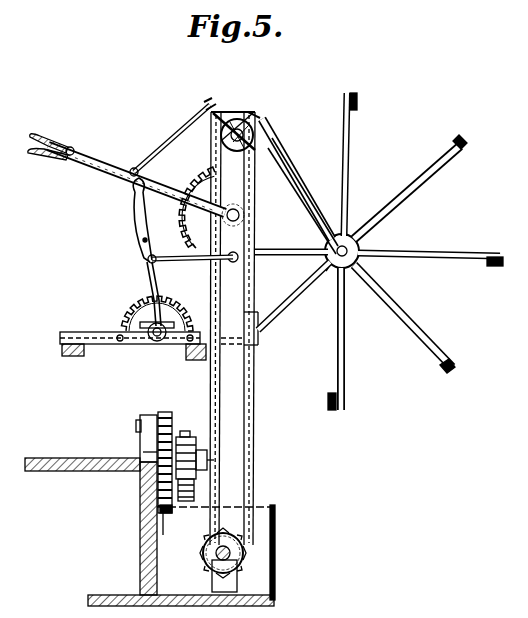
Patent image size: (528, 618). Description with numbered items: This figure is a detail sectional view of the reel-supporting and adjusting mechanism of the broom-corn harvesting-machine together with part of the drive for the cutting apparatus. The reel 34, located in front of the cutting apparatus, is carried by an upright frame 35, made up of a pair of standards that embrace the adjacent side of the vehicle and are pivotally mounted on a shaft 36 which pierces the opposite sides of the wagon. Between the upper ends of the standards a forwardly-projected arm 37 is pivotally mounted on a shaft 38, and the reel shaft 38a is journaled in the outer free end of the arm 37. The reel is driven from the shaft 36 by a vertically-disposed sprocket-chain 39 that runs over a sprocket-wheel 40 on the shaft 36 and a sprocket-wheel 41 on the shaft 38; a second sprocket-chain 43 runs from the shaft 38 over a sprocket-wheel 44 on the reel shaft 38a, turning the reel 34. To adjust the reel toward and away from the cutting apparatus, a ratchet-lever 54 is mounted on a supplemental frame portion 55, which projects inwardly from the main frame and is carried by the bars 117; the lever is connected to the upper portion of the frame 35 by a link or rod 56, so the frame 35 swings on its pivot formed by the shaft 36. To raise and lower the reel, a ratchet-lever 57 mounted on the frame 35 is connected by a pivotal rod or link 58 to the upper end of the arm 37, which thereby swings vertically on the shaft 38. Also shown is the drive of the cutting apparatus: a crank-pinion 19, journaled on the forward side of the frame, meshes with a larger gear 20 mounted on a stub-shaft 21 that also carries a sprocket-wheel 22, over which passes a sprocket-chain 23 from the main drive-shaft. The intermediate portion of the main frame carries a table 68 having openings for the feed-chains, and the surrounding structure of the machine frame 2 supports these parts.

The frame 2 is at (272, 527).
The crank-pinion 19 is at (168, 412).
The larger gear 20 is at (172, 514).
The stub-shaft 21 is at (207, 462).
The sprocket-wheel 22 is at (190, 440).
The sprocket-chain 23 is at (189, 491).
The reel 34 is at (415, 251).
The upright frame 35 is at (240, 281).
The shaft 36 is at (241, 551).
The forwardly-projected arm 37 is at (280, 172).
The shaft 38 is at (238, 134).
The reel shaft 38a is at (359, 249).
The sprocket-chain 39 is at (251, 393).
The sprocket-wheel 40 is at (236, 567).
The sprocket-wheel 41 is at (256, 132).
The sprocket-chain 43 is at (318, 192).
The sprocket-wheel 44 is at (348, 272).
The ratchet-lever 54 is at (140, 240).
The supplemental frame portion 55 is at (100, 334).
The link or rod 56 is at (188, 262).
The ratchet-lever 57 is at (86, 165).
The pivotal rod or link 58 is at (176, 136).
The table 68 is at (70, 458).
The bars 117 is at (72, 356).